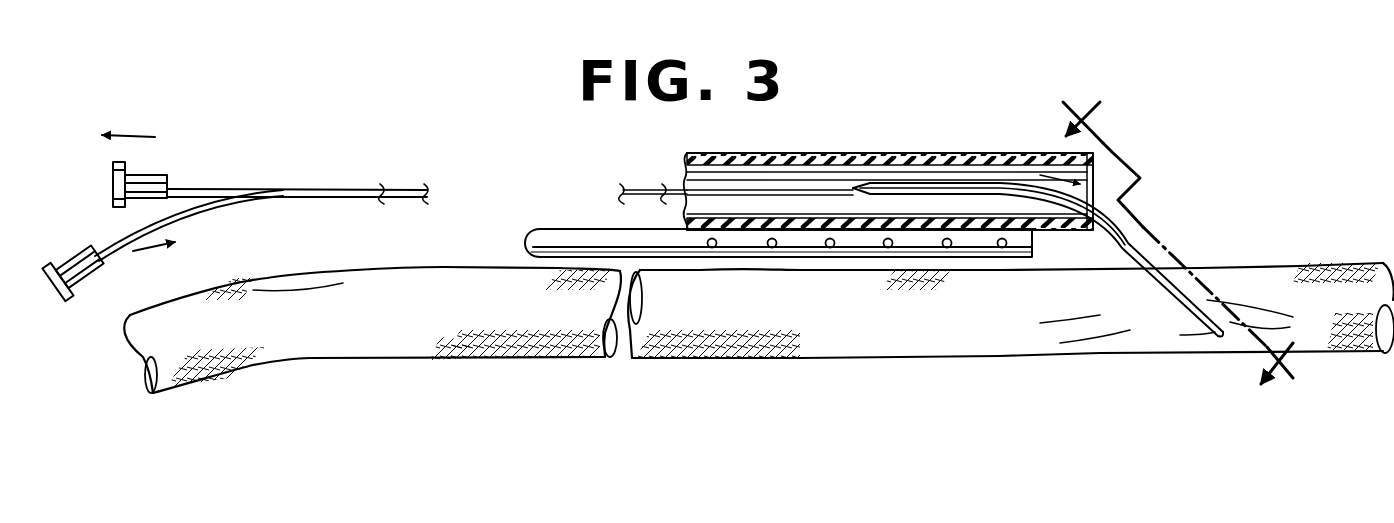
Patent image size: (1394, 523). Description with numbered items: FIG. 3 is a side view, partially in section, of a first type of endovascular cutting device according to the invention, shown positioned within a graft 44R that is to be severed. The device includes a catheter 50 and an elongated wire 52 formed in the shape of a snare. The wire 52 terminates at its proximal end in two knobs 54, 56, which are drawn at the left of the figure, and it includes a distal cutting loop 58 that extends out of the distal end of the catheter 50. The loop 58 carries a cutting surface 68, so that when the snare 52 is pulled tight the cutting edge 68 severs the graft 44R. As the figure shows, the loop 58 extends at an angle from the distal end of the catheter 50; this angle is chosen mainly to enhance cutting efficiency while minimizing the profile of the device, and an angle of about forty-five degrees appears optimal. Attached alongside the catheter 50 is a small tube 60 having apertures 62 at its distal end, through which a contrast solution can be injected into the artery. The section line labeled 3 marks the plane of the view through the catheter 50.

The graft 44R is at (425, 340).
The catheter 50 is at (888, 152).
The elongated wire 52 is at (232, 189).
The proximal knob 54 is at (93, 268).
The proximal knob 56 is at (152, 182).
The distal cutting loop 58 is at (997, 192).
The small tube 60 is at (567, 235).
The apertures 62 is at (829, 248).
The cutting surface 68 is at (978, 185).
The section line 3- 3 is at (1192, 228).